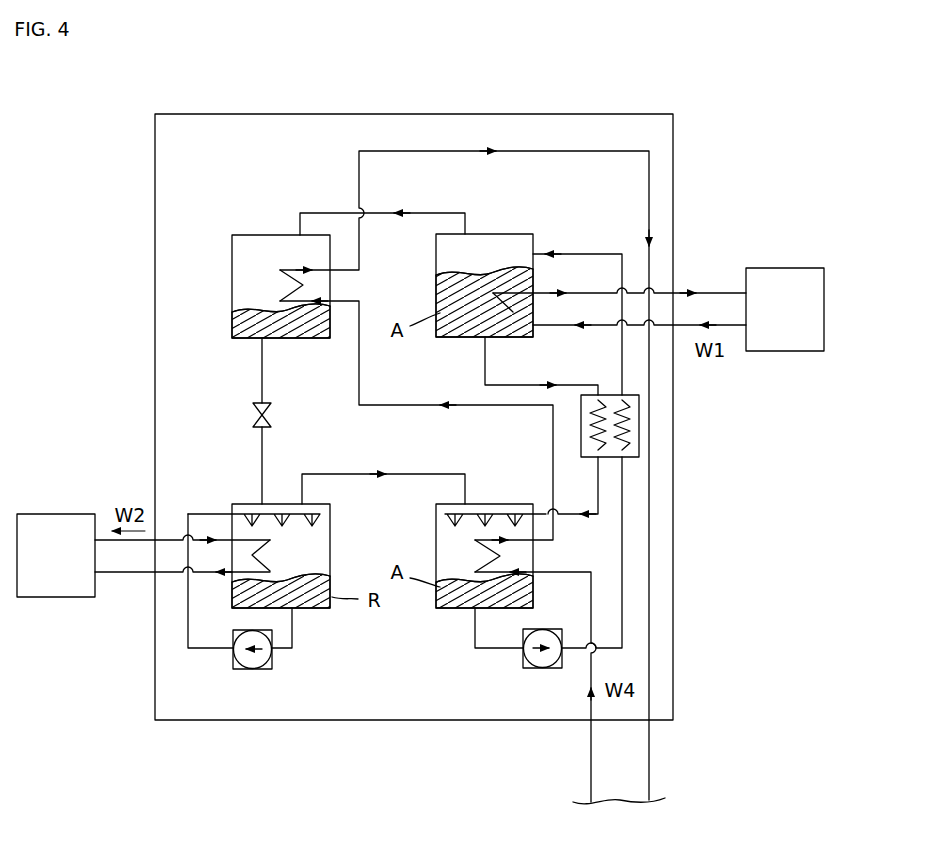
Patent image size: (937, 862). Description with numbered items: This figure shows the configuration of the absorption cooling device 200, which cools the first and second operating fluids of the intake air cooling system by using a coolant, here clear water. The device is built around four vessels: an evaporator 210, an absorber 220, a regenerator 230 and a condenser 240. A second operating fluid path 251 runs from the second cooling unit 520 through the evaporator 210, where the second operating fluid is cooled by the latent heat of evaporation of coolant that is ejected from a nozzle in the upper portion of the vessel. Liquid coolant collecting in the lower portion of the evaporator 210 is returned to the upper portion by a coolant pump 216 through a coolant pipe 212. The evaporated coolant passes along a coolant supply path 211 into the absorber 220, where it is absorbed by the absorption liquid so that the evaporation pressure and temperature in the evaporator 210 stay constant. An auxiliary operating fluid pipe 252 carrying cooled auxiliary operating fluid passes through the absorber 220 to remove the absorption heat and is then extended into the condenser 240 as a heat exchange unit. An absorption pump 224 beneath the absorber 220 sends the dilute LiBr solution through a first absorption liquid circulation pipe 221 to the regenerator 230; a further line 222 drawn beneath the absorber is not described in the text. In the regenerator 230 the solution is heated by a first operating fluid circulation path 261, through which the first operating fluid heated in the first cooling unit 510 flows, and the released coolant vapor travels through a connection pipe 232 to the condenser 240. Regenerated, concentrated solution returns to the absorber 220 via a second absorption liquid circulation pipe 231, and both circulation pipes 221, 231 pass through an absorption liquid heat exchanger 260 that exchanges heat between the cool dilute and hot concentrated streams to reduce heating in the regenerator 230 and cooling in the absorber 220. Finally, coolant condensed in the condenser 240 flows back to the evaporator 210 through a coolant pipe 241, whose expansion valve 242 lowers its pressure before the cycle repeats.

The absorption cooling device 200 is at (406, 113).
The evaporator 210 is at (330, 545).
The coolant supply path 211 is at (418, 474).
The coolant pipe 212 is at (300, 652).
The coolant pump 216 is at (272, 668).
The absorber 220 is at (447, 608).
The first absorption liquid circulation pipe 221 is at (578, 253).
The absorbent circulation pipe 222 is at (483, 655).
The absorption pump 224 is at (530, 668).
The regenerator 230 is at (502, 233).
The second absorption liquid circulation pipe 231 is at (572, 383).
The connection pipe 232 is at (420, 212).
The condenser 240 is at (248, 232).
The coolant pipe 241 is at (262, 383).
The expansion valve 242 is at (272, 418).
The second operating fluid path 251 is at (170, 538).
The auxiliary operating fluid pipe 252 is at (359, 245).
The absorption liquid heat exchanger 260 is at (640, 425).
The first operating fluid circulation path 261 is at (721, 292).
The first cooling unit 510 is at (795, 266).
The second cooling unit 520 is at (40, 512).